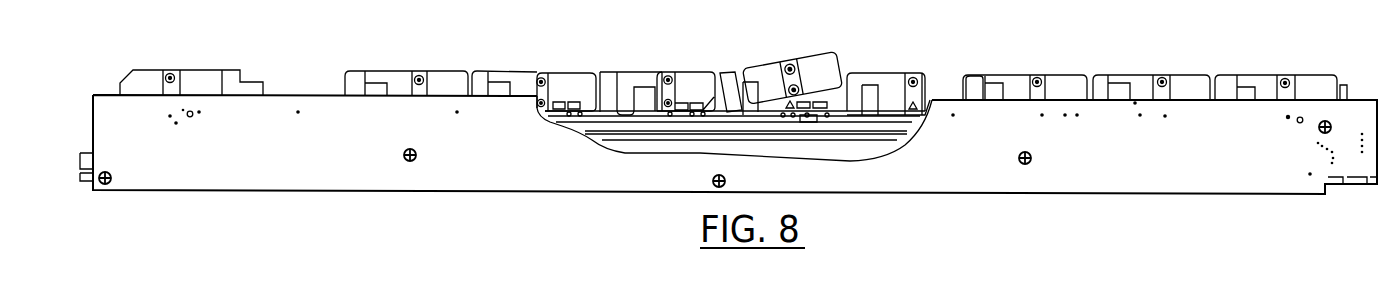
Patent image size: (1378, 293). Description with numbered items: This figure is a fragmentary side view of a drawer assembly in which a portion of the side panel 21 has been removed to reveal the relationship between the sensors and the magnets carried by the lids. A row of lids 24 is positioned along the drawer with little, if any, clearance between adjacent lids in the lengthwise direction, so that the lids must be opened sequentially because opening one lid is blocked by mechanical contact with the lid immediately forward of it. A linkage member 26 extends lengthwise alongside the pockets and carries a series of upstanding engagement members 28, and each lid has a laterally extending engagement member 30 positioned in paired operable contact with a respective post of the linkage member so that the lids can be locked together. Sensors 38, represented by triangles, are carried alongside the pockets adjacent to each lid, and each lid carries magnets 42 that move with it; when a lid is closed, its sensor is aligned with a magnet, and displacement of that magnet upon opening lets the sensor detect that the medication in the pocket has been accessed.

The side panel 21 is at (1237, 175).
The lid 24 is at (805, 57).
The linkage member 26 is at (750, 118).
The engagement member 28 is at (743, 80).
The engagement member 30 is at (727, 85).
The sensor 38 is at (780, 118).
The magnet 42 is at (542, 72).